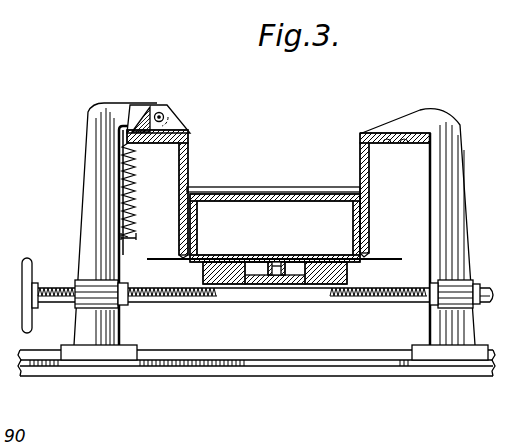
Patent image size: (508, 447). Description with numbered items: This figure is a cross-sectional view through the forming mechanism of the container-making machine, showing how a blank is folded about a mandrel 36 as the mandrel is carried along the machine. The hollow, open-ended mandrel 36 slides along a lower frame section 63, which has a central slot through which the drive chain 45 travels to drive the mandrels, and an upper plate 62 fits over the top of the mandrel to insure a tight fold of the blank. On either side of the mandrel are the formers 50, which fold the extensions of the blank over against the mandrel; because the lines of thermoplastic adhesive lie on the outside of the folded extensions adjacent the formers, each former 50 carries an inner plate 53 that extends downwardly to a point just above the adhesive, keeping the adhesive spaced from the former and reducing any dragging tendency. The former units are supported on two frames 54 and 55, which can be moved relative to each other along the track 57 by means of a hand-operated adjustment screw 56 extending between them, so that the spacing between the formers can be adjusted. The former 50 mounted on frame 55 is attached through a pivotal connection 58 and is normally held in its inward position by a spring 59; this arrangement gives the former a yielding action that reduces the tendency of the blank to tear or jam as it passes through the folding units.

The mandrel 36 is at (355, 262).
The chain 45 is at (274, 262).
The former 50 is at (180, 231).
The inner plate 53 is at (190, 162).
The frame 54 is at (448, 233).
The frame 55 is at (84, 197).
The hand-operated adjustment screw 56 is at (54, 283).
The track 57 is at (285, 359).
The pivotal connection 58 is at (162, 108).
The spring 59 is at (136, 182).
The upper plate 62 is at (262, 191).
The lower frame section 63 is at (222, 285).